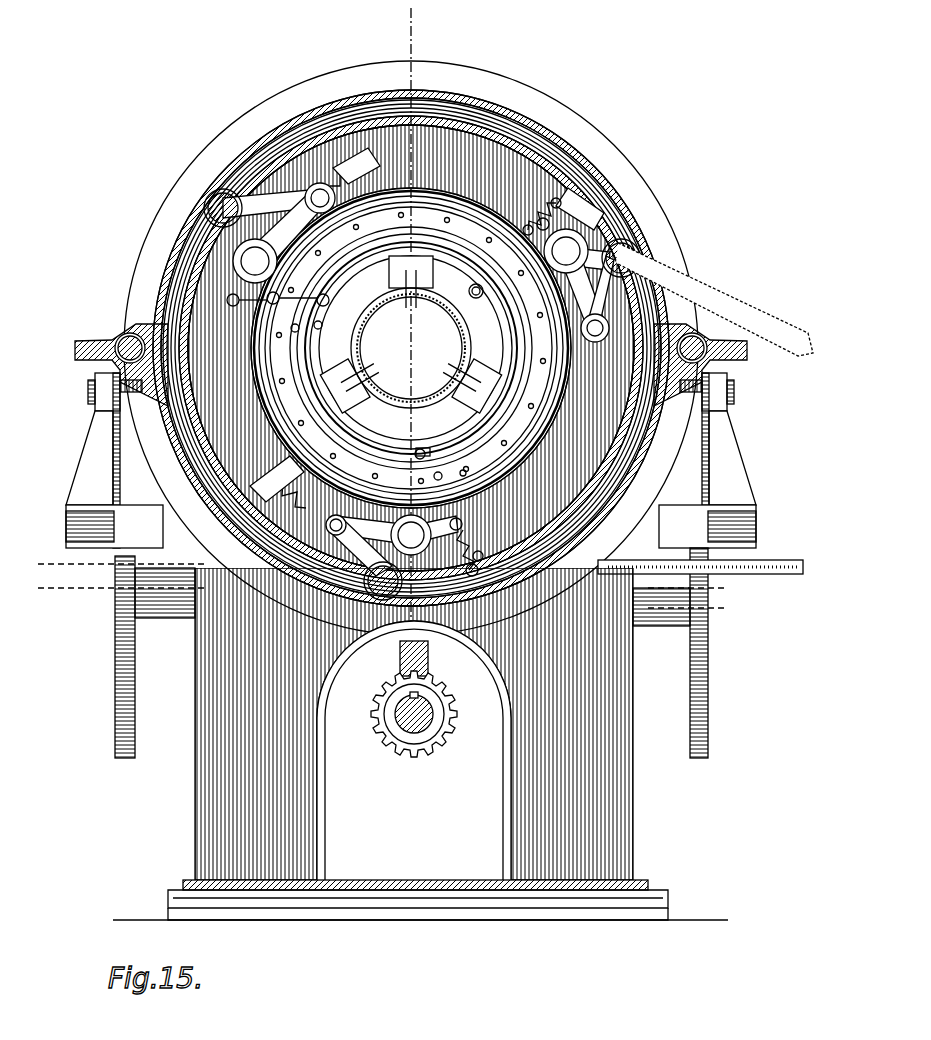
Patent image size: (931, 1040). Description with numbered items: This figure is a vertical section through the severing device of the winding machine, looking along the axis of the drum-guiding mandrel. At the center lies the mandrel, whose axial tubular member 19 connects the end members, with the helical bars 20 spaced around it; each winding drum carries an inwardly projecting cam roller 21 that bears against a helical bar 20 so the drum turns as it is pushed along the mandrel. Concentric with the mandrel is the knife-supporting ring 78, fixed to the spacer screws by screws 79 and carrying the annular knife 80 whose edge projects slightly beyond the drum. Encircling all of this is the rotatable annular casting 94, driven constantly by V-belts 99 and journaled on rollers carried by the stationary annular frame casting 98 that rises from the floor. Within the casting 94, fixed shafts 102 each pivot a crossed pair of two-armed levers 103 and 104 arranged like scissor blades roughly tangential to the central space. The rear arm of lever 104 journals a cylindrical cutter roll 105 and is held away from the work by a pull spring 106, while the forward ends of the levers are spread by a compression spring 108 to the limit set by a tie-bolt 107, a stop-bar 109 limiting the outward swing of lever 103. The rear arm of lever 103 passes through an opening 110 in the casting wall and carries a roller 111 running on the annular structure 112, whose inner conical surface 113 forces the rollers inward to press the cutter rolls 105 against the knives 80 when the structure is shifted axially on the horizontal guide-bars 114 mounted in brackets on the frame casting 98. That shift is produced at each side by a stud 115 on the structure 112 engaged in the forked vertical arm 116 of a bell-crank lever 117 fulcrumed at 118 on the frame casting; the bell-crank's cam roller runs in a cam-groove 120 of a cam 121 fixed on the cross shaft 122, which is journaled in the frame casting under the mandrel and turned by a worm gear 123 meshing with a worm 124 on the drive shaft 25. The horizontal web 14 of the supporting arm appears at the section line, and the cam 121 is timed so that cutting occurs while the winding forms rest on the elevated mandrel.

The horizontal web 14 is at (394, 20).
The axial tubular member 19 is at (430, 390).
The helical bars 20 is at (465, 286).
The cam roller 21 is at (434, 445).
The drive shaft 25 is at (406, 724).
The knife-supporting ring 78 is at (290, 357).
The screws 79 is at (290, 322).
The annular knife 80 is at (438, 226).
The annular casting 94 is at (205, 308).
The annular frame casting 98 is at (612, 680).
The V-belts 99 is at (760, 566).
The fixed shafts 102 is at (292, 162).
The two-armed lever 103 is at (228, 160).
The two-armed lever 104 is at (654, 182).
The cutter roll 105 is at (258, 290).
The pull spring 106 is at (222, 290).
The tie-bolt 107 is at (342, 156).
The compression spring 108 is at (352, 160).
The stop-bar 109 is at (320, 203).
The opening 110 is at (200, 205).
The roller 111 is at (205, 188).
The annular structure 112 is at (515, 118).
The inner conical surface 113 is at (445, 96).
The horizontal guide-bars 114 is at (110, 324).
The stud 115 is at (80, 377).
The vertical arm 116 is at (78, 445).
The bell-crank lever 117 is at (58, 500).
The fulcrum 118 is at (58, 521).
The cam-groove 120 is at (716, 603).
The cam 121 is at (700, 648).
The shaft 122 is at (196, 610).
The worm gear 123 is at (420, 650).
The worm 124 is at (432, 704).